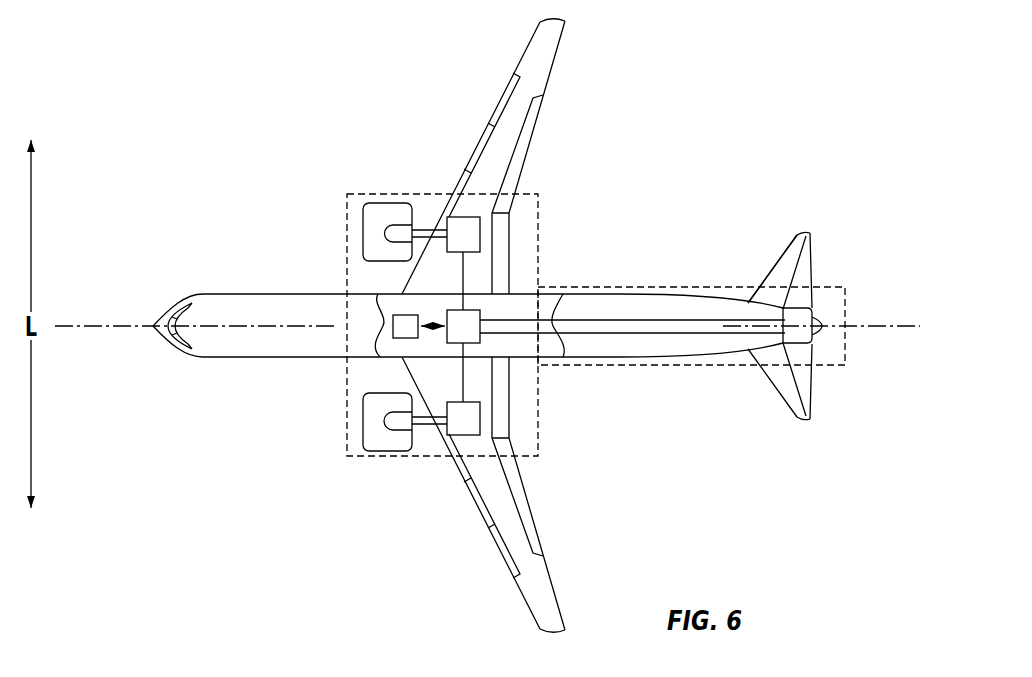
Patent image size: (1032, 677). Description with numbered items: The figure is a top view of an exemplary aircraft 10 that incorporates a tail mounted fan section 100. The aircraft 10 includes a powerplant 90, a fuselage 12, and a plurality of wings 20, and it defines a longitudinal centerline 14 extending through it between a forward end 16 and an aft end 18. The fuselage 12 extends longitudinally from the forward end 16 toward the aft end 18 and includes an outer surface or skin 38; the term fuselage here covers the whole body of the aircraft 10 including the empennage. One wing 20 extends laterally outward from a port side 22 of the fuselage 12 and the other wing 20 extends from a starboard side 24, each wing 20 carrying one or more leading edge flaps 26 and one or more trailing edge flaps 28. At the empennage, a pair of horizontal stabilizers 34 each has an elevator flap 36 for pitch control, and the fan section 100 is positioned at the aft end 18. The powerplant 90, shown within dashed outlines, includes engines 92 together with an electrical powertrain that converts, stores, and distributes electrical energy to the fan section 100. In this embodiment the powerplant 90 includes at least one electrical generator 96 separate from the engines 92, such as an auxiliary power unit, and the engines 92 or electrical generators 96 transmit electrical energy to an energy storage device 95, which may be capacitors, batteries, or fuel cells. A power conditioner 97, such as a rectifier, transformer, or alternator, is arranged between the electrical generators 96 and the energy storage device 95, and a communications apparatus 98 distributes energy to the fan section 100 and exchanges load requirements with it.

The aircraft 10 is at (675, 118).
The fuselage 12 is at (213, 347).
The longitudinal centerline 14 is at (107, 323).
The forward end 16 is at (152, 340).
The aft end 18 is at (789, 334).
The wings 20 is at (543, 55).
The port side 22 is at (277, 375).
The starboard side 24 is at (262, 293).
The leading edge flaps 26 is at (470, 503).
The trailing edge flaps 28 is at (530, 508).
The horizontal stabilizers 34 is at (787, 260).
The elevator flap 36 is at (808, 258).
The outer surface or skin 38 is at (630, 345).
The powerplant 90 is at (433, 193).
The engines 92 is at (380, 210).
The energy storage device 95 is at (403, 338).
The electrical generator 96 is at (480, 233).
The power conditioner 97 is at (480, 315).
The communications apparatus 98 is at (692, 335).
The fan section 100 is at (813, 297).